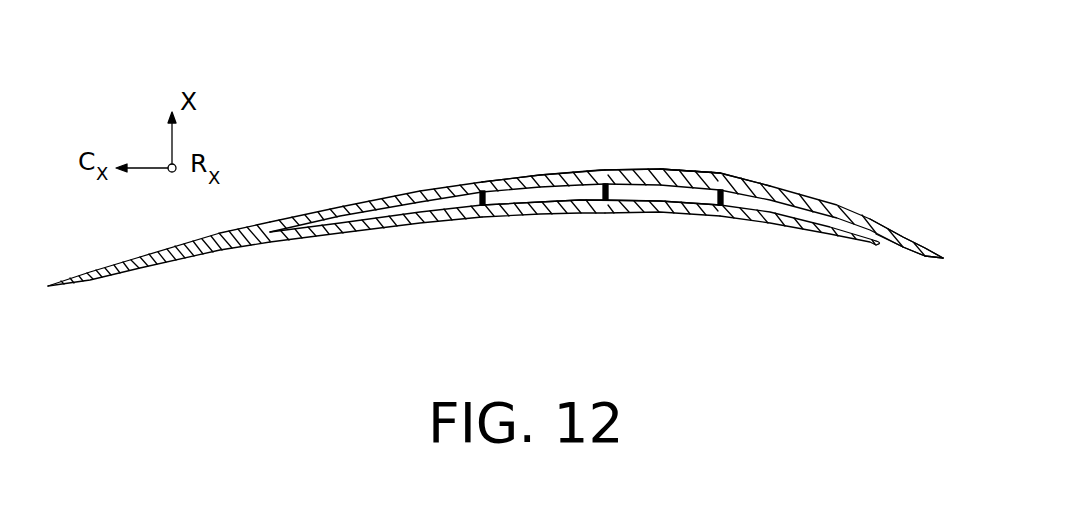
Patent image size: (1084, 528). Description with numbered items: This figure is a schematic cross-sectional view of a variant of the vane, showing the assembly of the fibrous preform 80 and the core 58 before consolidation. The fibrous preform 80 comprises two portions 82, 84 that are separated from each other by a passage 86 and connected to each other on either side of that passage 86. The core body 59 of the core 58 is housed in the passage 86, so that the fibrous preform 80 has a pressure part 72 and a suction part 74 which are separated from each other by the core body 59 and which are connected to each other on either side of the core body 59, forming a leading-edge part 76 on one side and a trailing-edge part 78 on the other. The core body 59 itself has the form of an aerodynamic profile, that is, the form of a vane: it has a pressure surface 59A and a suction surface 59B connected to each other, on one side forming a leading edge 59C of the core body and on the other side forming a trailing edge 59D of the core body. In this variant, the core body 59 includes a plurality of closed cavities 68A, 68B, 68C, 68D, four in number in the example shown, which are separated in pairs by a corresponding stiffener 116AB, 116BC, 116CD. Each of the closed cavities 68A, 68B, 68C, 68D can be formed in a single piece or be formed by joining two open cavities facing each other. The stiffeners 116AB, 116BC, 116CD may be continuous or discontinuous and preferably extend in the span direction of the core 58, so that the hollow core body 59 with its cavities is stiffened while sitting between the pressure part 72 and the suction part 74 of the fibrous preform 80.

The trailing-edge part 78 is at (197, 250).
The leading-edge part 76 is at (903, 248).
The fibrous preform 80 is at (915, 230).
The portion of the fibrous preform 84 is at (601, 129).
The suction part 74 is at (577, 170).
The portion of the fibrous preform 82 is at (601, 244).
The pressure part 72 is at (537, 196).
The passage 86 is at (742, 142).
The core 58 is at (742, 142).
The core body 59 is at (700, 181).
The closed cavity 68A is at (768, 201).
The closed cavity 68B is at (647, 190).
The closed cavity 68C is at (538, 184).
The closed cavity 68D is at (396, 203).
The pressure surface 59A is at (670, 208).
The suction surface 59B is at (500, 178).
The leading edge of the core body 59C is at (878, 244).
The trailing edge of the core body 59D is at (272, 234).
The stiffener 116AB is at (732, 206).
The stiffener 116BC is at (596, 196).
The stiffener 116CD is at (478, 201).